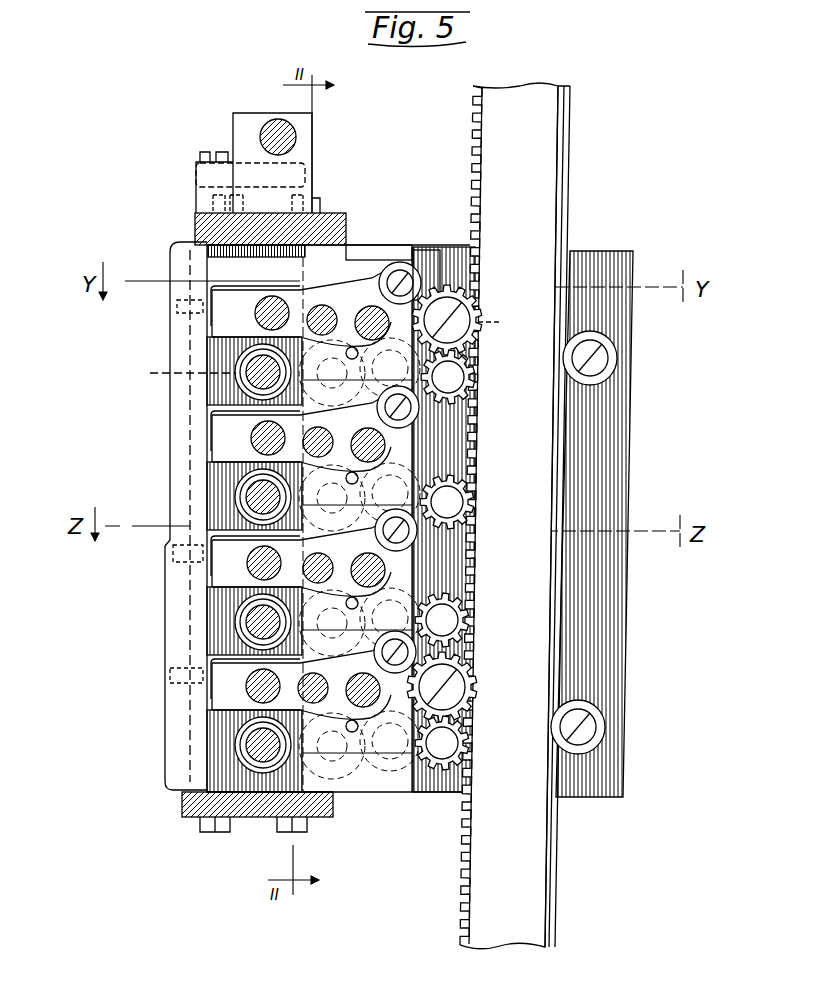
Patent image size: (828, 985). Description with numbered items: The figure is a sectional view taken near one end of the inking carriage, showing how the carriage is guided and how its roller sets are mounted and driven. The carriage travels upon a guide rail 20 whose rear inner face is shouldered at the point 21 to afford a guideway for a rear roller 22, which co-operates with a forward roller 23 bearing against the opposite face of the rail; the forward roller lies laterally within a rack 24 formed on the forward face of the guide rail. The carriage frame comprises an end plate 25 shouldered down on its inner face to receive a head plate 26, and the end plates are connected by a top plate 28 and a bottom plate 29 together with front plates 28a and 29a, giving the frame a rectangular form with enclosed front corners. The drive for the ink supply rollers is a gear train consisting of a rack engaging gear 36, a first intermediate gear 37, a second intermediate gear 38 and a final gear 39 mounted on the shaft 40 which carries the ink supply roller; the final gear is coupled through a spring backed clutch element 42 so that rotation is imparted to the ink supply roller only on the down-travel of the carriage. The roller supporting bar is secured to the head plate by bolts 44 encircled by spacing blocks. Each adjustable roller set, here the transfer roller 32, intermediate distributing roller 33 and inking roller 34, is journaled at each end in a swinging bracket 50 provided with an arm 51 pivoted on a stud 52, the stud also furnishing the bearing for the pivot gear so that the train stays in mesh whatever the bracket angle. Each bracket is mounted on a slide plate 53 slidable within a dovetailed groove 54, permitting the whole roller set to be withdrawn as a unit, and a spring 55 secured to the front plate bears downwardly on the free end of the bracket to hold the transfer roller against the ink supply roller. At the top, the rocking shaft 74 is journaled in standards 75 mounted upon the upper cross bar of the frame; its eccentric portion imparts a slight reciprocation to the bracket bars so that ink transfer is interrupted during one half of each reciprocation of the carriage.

The guide rail 20 is at (513, 516).
The shoulder point 21 is at (565, 219).
The rear roller 22 is at (618, 356).
The forward roller 23 is at (470, 292).
The rack 24 is at (473, 150).
The end plate 25 is at (440, 800).
The head plate 26 is at (278, 800).
The top plate 28 is at (322, 224).
The front plate 28a is at (178, 405).
The bottom plate 29 is at (247, 818).
The front plate 29a is at (378, 266).
The transfer roller 32 is at (256, 313).
The intermediate distributing roller 33 is at (328, 305).
The inking roller 34 is at (388, 283).
The rack engaging gear 36 is at (464, 377).
The first intermediate gear 37 is at (470, 366).
The second intermediate gear 38 is at (508, 323).
The final gear 39 is at (174, 371).
The shaft 40 is at (252, 372).
The spring backed clutch element 42 is at (240, 363).
The bolt 44 is at (346, 354).
The swinging bracket 50 is at (360, 313).
The arm 51 is at (418, 270).
The stud 52 is at (428, 296).
The slide plate 53 is at (296, 288).
The dovetailed groove 54 is at (356, 256).
The spring 55 is at (256, 286).
The shaft 74 is at (298, 141).
The standard 75 is at (280, 197).